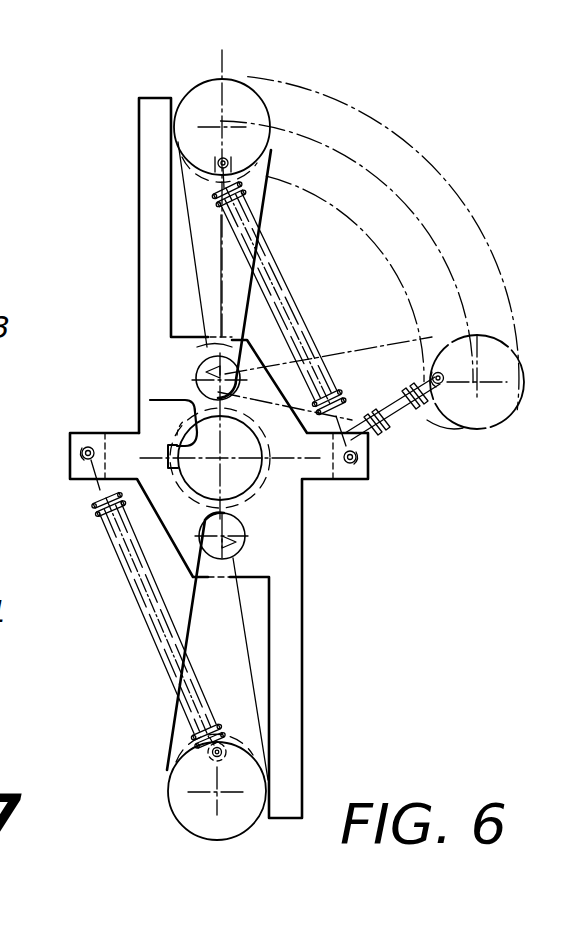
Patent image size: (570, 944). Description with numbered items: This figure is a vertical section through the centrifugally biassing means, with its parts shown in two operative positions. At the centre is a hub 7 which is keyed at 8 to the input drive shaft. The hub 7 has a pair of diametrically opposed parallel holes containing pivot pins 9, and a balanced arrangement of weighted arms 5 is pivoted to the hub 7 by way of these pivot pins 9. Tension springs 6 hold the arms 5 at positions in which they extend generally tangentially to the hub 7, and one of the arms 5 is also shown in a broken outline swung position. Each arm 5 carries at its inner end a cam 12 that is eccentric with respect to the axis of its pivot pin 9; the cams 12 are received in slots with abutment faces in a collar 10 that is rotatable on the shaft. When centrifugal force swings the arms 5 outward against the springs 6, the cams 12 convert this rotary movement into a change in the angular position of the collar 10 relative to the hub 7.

The weighted arms 5 is at (203, 237).
The tension springs 6 is at (293, 293).
The hub 7 is at (168, 412).
The key 8 is at (183, 400).
The pivot pins 9 is at (193, 368).
The collar 10 is at (0, 399).
The cam 12 is at (195, 391).